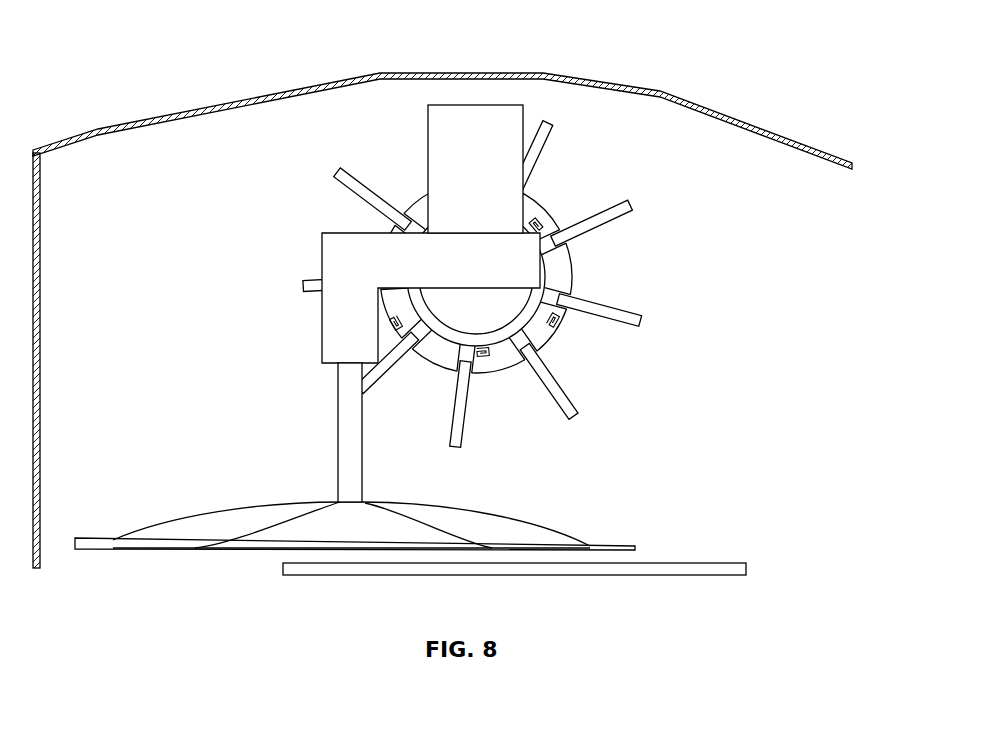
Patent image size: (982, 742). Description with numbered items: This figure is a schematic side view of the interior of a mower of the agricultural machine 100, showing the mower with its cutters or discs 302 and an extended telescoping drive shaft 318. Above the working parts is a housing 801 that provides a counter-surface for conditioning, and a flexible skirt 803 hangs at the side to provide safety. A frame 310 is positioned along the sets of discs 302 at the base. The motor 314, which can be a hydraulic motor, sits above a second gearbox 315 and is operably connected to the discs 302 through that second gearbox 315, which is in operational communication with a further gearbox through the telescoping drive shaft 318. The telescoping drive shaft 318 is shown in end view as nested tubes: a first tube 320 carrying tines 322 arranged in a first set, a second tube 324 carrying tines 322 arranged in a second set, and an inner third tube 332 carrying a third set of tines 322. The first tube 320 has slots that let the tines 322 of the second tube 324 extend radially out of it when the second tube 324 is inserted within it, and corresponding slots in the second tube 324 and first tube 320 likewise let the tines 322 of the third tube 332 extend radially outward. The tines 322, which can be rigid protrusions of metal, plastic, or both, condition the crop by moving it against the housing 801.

The agricultural machine 100 is at (166, 40).
The housing 801 is at (195, 112).
The flexible skirt 803 is at (41, 307).
The motor 314 is at (458, 118).
The second gearbox 315 is at (497, 263).
The telescoping drive shaft 318 is at (459, 294).
The first tube 320 is at (569, 275).
The tines 322 is at (328, 186).
The second tube 324 is at (437, 348).
The third tube 332 is at (503, 335).
The discs 302 is at (198, 522).
The frame 310 is at (682, 563).